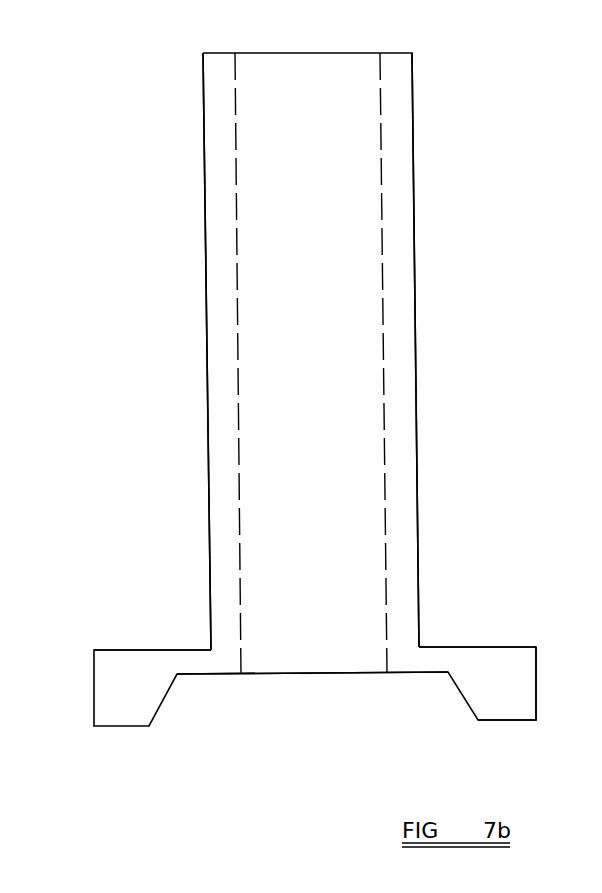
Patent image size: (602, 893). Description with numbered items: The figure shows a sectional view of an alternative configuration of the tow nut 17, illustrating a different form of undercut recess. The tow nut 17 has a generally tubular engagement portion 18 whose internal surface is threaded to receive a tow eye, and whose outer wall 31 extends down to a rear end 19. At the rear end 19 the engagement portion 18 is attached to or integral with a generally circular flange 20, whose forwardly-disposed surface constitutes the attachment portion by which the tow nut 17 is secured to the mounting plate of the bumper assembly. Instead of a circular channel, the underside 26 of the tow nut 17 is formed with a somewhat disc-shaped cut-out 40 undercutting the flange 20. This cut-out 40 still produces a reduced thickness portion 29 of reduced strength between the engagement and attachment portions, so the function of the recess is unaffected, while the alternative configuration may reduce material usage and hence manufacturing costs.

The tow nut 17 is at (455, 431).
The engagement portion 18 is at (207, 509).
The rear end 19 is at (429, 629).
The flange 20 is at (110, 650).
The underside 26 is at (500, 722).
The reduced thickness portion 29 is at (154, 649).
The outer wall 31 is at (413, 292).
The disc-shaped cut-out 40 is at (297, 720).